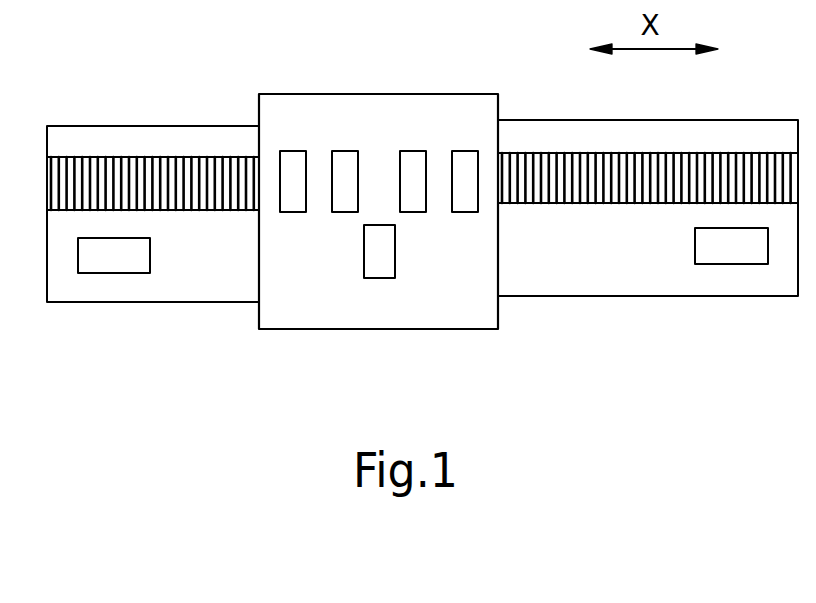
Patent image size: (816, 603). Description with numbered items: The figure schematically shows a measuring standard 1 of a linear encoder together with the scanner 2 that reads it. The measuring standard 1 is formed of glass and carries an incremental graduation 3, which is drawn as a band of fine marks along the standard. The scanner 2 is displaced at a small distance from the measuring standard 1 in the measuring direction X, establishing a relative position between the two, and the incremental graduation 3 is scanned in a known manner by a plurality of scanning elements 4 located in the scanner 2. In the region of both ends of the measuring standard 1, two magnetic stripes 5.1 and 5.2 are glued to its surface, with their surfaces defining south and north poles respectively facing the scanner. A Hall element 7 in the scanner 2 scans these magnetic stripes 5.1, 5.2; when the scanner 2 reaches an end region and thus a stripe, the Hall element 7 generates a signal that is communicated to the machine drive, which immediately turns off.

The measuring standard 1 is at (113, 142).
The scanner 2 is at (345, 326).
The incremental graduation 3 is at (201, 170).
The scanning elements 4 is at (288, 155).
The magnetic stripe 5.1 is at (133, 269).
The magnetic stripe 5.2 is at (760, 259).
The Hall element 7 is at (378, 278).